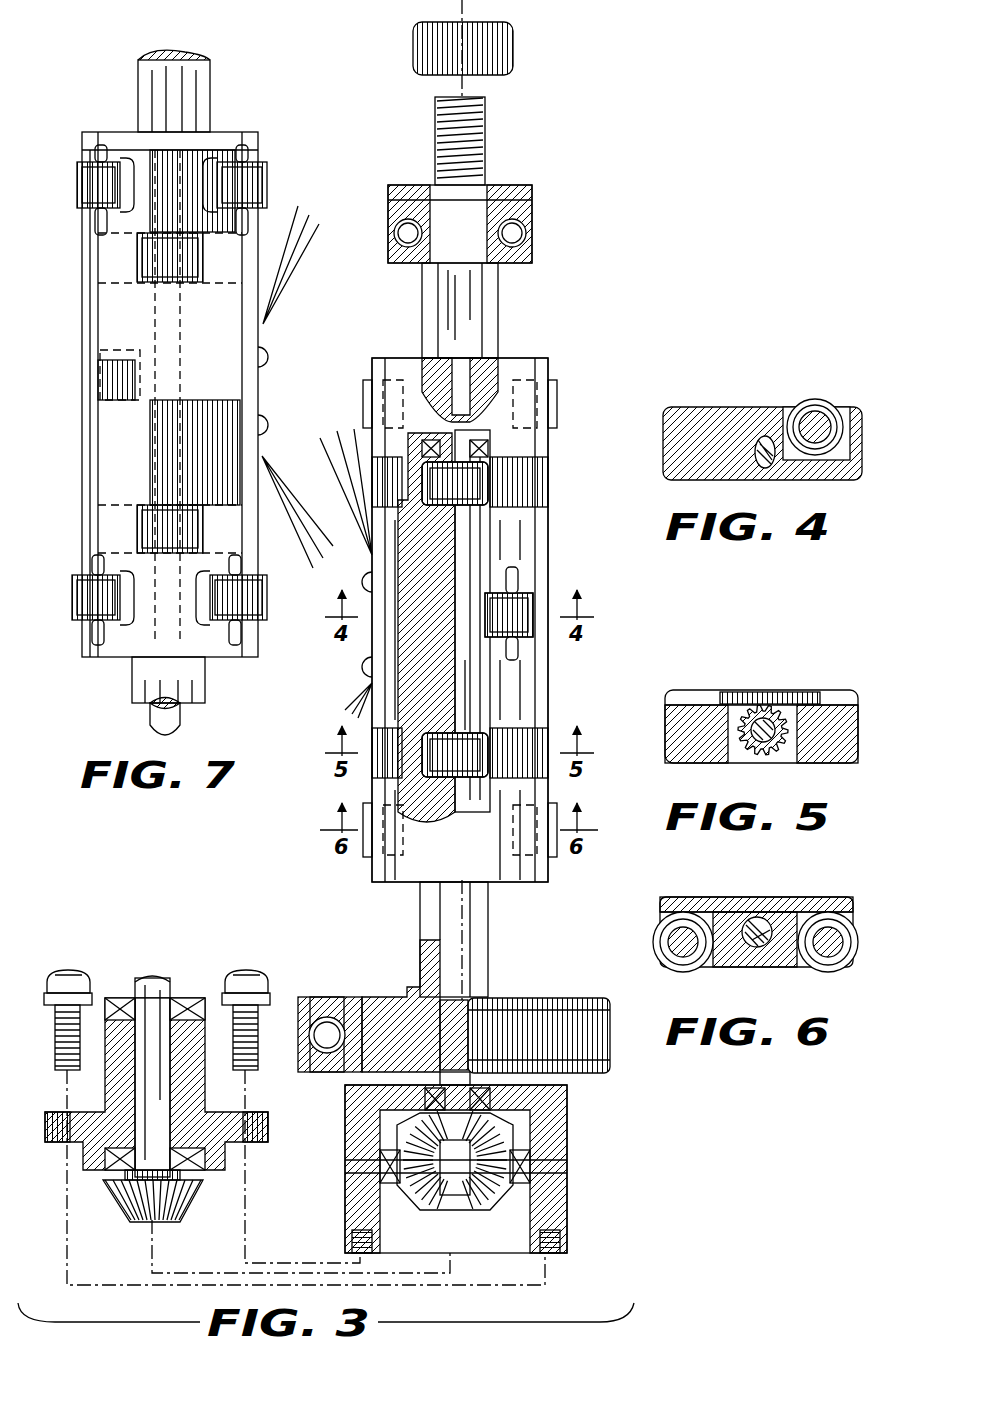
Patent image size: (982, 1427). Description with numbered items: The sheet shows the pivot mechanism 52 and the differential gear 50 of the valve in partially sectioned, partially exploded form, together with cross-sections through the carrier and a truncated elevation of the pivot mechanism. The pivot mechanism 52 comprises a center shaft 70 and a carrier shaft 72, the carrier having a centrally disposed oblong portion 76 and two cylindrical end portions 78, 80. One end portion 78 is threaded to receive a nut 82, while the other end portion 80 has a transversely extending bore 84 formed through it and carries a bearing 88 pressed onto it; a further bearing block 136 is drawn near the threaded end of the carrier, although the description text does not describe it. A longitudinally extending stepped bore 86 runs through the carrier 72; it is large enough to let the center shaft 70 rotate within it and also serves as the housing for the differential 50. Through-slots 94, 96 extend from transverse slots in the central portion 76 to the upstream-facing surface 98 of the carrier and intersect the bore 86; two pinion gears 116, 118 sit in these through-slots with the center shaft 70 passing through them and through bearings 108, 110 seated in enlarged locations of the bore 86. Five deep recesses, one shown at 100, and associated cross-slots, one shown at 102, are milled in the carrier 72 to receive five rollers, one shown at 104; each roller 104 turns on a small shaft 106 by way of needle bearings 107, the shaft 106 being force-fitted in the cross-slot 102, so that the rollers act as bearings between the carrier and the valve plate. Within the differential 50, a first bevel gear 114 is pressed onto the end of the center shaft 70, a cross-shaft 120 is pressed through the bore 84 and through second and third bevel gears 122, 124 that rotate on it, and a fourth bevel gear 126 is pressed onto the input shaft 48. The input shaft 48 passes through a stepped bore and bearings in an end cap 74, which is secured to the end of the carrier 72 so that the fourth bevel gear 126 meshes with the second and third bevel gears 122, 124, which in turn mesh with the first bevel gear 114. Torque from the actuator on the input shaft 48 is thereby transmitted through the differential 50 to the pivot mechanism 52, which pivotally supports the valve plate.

In FIG. 3, the input shaft 48 is at (153, 978).
In FIG. 3, the differential gear 50 is at (465, 1232).
In FIG. 3, the pivot mechanism 52 is at (294, 87).
In FIG. 7, the center shaft 70 is at (183, 724).
In FIG. 3, the center shaft 70 is at (446, 576).
In FIG. 4, the center shaft 70 is at (760, 437).
In FIG. 5, the center shaft 70 is at (775, 716).
In FIG. 6, the center shaft 70 is at (762, 918).
In FIG. 7, the carrier shaft 72 is at (272, 151).
In FIG. 3, the carrier shaft 72 is at (560, 556).
In FIG. 4, the carrier shaft 72 is at (675, 407).
In FIG. 5, the carrier shaft 72 is at (668, 690).
In FIG. 6, the carrier shaft 72 is at (683, 897).
In FIG. 3, the end cap 74 is at (200, 998).
In FIG. 3, the oblong portion 76 is at (548, 575).
In FIG. 3, the end portion 78 is at (498, 312).
In FIG. 3, the end portion 80 is at (490, 926).
In FIG. 3, the nut 82 is at (513, 58).
In FIG. 3, the transversely-extending bore 84 is at (345, 1196).
In FIG. 7, the stepped bore 86 is at (180, 330).
In FIG. 3, the stepped bore 86 is at (425, 894).
In FIG. 3, the bearing 88 is at (318, 997).
In FIG. 3, the through-slot 94 is at (490, 481).
In FIG. 3, the through-slot 96 is at (488, 760).
In FIG. 7, the upstream-facing surface 98 is at (95, 478).
In FIG. 7, the deep recess 100 is at (160, 385).
In FIG. 7, the cross-slot 102 is at (118, 430).
In FIG. 7, the roller 104 is at (77, 184).
In FIG. 4, the roller 104 is at (805, 401).
In FIG. 6, the roller 104 is at (815, 968).
In FIG. 7, the small shaft 106 is at (90, 225).
In FIG. 4, the small shaft 106 is at (820, 411).
In FIG. 6, the small shaft 106 is at (828, 960).
In FIG. 4, the needle bearings 107 is at (837, 402).
In FIG. 6, the needle bearings 107 is at (672, 968).
In FIG. 3, the bearing 108 is at (490, 446).
In FIG. 3, the bearing 110 is at (436, 1076).
In FIG. 3, the first bevel gear 114 is at (422, 1100).
In FIG. 3, the pinion gear 116 is at (488, 505).
In FIG. 3, the pinion gear 118 is at (478, 682).
In FIG. 5, the pinion gear 118 is at (756, 708).
In FIG. 3, the cross-shaft 120 is at (345, 1166).
In FIG. 3, the second bevel gear 122 is at (418, 1200).
In FIG. 3, the third bevel gear 124 is at (490, 1142).
In FIG. 3, the fourth bevel gear 126 is at (120, 1220).
In FIG. 3, the bearing block 136 is at (532, 230).